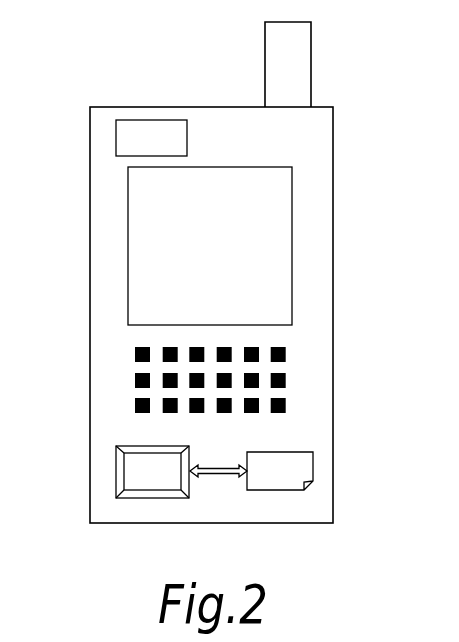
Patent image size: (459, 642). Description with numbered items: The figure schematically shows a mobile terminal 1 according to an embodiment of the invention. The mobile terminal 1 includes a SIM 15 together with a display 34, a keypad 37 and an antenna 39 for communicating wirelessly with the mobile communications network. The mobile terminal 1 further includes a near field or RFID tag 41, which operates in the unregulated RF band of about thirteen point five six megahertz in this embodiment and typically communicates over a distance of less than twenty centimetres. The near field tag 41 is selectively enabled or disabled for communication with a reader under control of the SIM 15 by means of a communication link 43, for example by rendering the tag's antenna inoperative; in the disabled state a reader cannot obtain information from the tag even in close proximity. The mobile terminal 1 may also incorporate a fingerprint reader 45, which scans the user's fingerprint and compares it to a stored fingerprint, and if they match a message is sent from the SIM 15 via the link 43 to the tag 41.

The mobile terminal 1 is at (346, 319).
The antenna 39 is at (303, 44).
The fingerprint reader 45 is at (143, 128).
The display 34 is at (284, 238).
The keypad 37 is at (285, 380).
The near field tag 41 is at (132, 467).
The communication link 43 is at (213, 465).
The SIM 15 is at (313, 472).